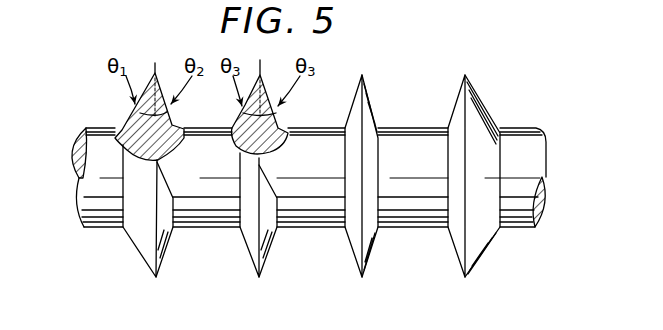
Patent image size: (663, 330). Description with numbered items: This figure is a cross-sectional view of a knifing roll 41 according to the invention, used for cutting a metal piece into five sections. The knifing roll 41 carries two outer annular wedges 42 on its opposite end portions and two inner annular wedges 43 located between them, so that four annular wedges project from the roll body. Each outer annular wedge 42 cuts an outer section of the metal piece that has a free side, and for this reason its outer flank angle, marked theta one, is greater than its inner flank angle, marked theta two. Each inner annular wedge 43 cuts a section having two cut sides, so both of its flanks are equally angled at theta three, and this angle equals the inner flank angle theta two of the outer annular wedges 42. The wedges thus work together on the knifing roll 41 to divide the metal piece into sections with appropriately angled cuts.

The knifing roll 41 is at (514, 108).
The outer annular wedge 42 is at (145, 120).
The inner annular wedge 43 is at (267, 122).